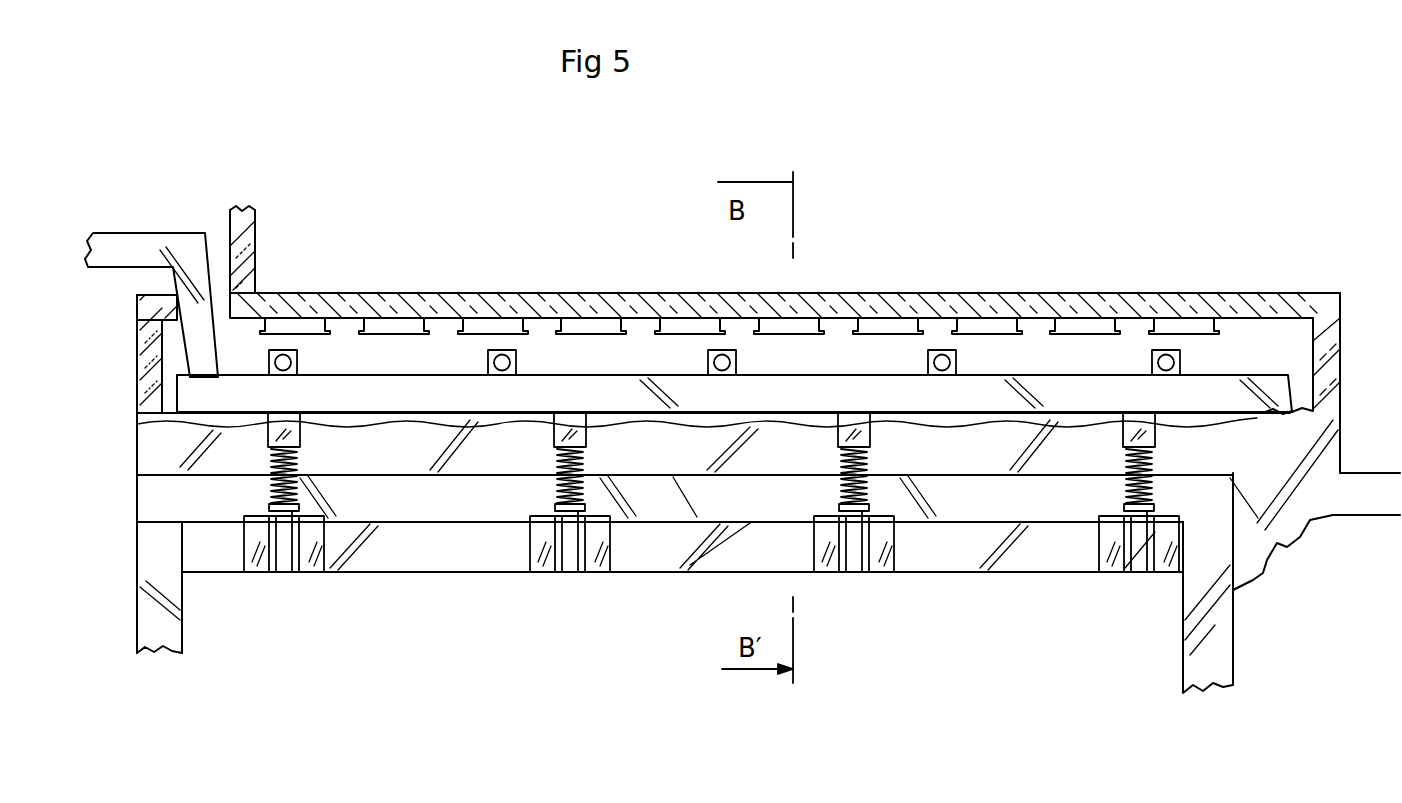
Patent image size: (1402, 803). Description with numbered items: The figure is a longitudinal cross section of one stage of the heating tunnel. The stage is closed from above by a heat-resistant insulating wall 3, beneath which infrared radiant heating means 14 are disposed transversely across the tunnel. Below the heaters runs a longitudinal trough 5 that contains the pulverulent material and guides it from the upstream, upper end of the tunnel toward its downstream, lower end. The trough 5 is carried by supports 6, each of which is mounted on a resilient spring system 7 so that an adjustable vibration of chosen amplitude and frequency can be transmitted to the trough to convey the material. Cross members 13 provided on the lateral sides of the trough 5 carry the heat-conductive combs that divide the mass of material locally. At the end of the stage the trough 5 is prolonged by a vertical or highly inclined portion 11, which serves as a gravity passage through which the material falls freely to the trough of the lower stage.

The insulating wall 3 is at (1077, 312).
The longitudinal trough 5 is at (410, 393).
The support 6 is at (573, 413).
The spring system 7 is at (273, 506).
The inclined portion 11 is at (197, 237).
The cross member 13 is at (293, 352).
The infrared radiant heating means 14 is at (393, 320).